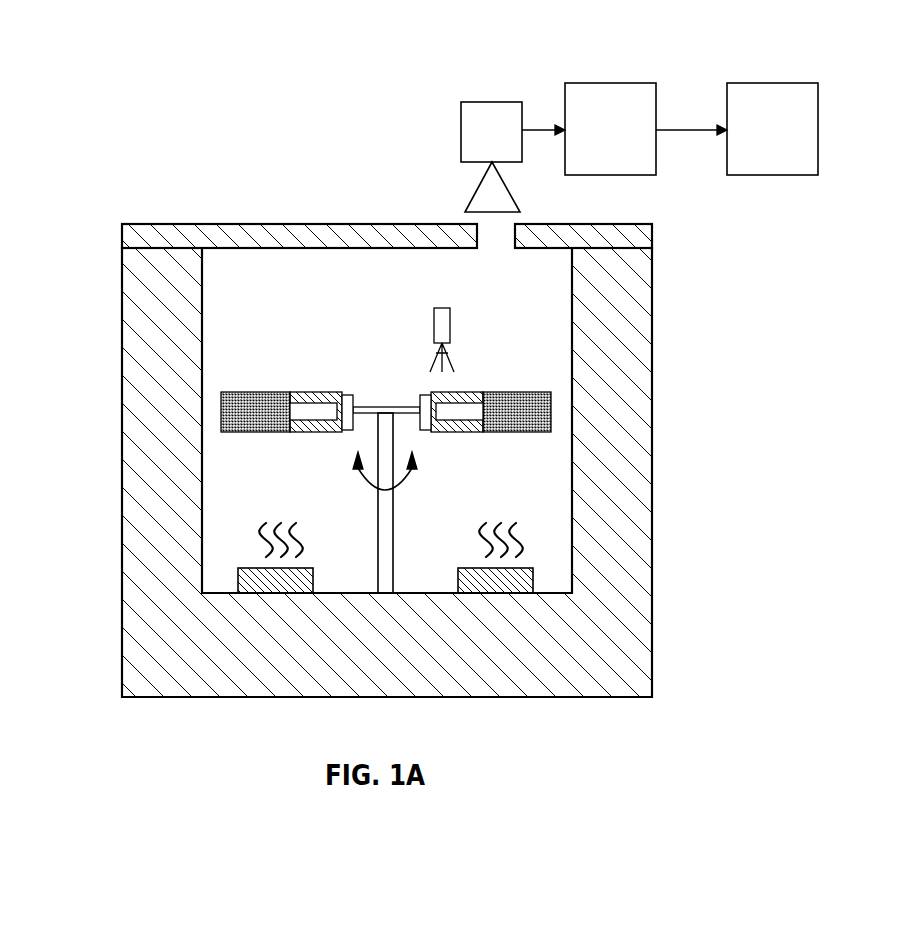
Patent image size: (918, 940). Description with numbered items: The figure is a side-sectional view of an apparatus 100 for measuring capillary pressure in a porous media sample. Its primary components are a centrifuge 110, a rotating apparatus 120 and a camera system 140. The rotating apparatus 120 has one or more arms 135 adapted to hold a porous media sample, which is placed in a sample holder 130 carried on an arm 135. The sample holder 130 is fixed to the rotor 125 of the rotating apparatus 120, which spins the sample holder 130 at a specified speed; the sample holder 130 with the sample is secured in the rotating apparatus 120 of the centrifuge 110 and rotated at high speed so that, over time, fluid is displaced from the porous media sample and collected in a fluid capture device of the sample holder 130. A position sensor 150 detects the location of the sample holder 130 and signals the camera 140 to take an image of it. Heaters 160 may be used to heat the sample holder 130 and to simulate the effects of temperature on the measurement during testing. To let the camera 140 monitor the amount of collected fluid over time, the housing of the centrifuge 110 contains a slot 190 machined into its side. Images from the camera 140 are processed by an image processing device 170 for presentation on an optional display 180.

The apparatus 100 is at (226, 132).
The centrifuge 110 is at (652, 310).
The rotating apparatus 120 is at (360, 570).
The rotor 125 is at (395, 512).
The sample holder 130 is at (221, 410).
The arm 135 is at (403, 407).
The camera system 140 is at (498, 100).
The position sensor 150 is at (452, 325).
The heaters 160 is at (238, 578).
The image processing device 170 is at (610, 83).
The display 180 is at (767, 83).
The slot 190 is at (494, 234).